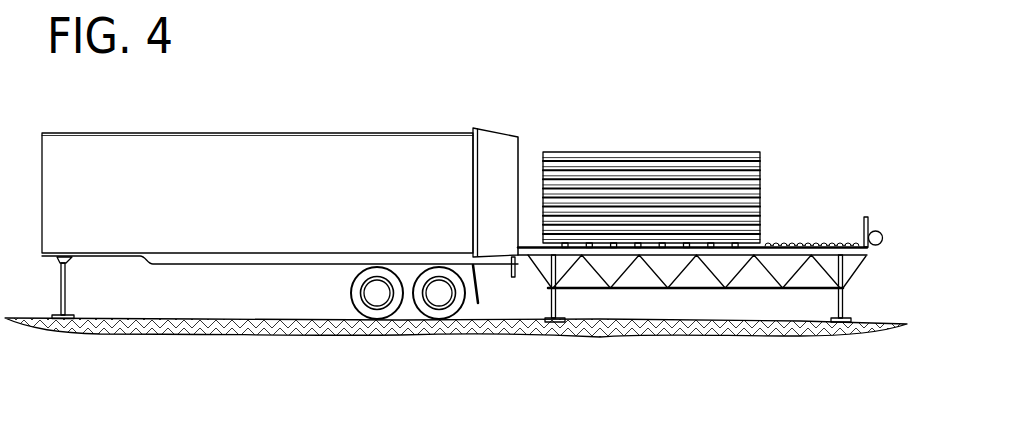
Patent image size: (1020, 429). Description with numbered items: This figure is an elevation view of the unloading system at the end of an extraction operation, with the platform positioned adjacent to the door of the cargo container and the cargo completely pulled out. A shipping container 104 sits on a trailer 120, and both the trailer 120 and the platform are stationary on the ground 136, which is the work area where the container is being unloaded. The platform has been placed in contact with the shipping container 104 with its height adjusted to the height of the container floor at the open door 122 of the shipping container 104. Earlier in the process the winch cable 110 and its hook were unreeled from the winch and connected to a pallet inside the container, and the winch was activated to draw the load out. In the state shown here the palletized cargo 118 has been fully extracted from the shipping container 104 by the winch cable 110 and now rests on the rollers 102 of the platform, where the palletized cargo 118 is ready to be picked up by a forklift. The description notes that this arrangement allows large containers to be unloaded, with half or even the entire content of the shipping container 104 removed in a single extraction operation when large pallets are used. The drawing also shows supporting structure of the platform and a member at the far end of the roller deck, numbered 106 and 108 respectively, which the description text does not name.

The rollers 102 is at (785, 246).
The shipping container 104 is at (150, 137).
The support legs 106 is at (556, 302).
The end roller 108 is at (883, 238).
The winch cable 110 is at (830, 246).
The palletized cargo 118 is at (675, 153).
The trailer 120 is at (240, 265).
The open door 122 is at (528, 148).
The ground 136 is at (524, 330).